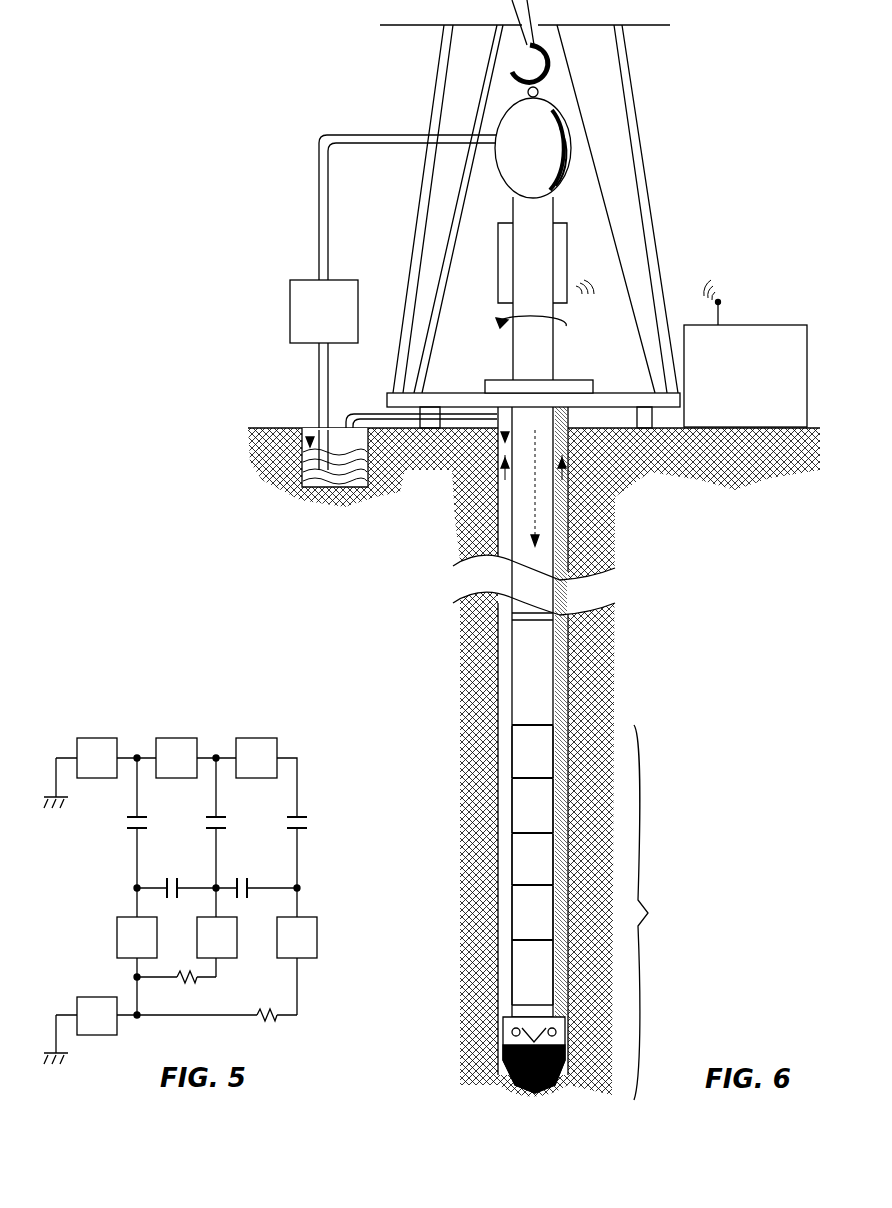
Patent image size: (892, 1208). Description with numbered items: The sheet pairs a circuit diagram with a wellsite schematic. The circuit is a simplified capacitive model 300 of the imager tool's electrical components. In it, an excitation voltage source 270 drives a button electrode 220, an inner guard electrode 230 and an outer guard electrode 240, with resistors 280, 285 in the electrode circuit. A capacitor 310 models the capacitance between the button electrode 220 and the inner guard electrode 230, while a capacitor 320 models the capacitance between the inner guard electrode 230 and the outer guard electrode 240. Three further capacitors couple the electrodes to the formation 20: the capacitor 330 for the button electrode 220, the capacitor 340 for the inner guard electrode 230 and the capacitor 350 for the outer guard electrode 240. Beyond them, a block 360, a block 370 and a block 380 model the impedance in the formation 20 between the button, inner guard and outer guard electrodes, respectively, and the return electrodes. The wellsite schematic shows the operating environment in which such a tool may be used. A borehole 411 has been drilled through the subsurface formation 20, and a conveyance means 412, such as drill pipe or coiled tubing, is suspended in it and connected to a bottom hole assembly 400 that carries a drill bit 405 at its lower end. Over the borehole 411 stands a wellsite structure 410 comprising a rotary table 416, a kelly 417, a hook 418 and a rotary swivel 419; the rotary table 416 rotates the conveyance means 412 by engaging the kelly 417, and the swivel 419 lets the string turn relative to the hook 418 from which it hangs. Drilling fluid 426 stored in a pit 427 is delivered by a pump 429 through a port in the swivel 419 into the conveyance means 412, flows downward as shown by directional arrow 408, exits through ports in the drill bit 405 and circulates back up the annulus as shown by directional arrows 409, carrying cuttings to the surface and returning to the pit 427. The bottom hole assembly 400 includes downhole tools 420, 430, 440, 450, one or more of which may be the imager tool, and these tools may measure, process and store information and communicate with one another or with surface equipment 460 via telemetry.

In FIG. 6, the formation 20 is at (534, 762).
In FIG. 6, the bottom hole assembly 400 is at (604, 856).
In FIG. 6, the drill bit 405 is at (503, 1050).
In FIG. 6, the directional arrow 408 is at (533, 512).
In FIG. 6, the directional arrows 409 is at (507, 492).
In FIG. 6, the wellsite structure 410 is at (650, 114).
In FIG. 6, the borehole 411 is at (497, 414).
In FIG. 6, the conveyance means 412 is at (560, 450).
In FIG. 6, the rotary table 416 is at (583, 378).
In FIG. 6, the kelly 417 is at (513, 353).
In FIG. 6, the hook 418 is at (553, 72).
In FIG. 6, the rotary swivel 419 is at (500, 182).
In FIG. 6, the downhole tool 420 is at (498, 805).
In FIG. 6, the downhole tool 430 is at (498, 860).
In FIG. 6, the downhole tool 440 is at (513, 913).
In FIG. 6, the downhole tool 450 is at (513, 967).
In FIG. 6, the drilling fluid 426 is at (335, 483).
In FIG. 6, the pit 427 is at (310, 435).
In FIG. 6, the pump 429 is at (306, 350).
In FIG. 6, the surface equipment 460 is at (746, 325).
In FIG. 5, the capacitive model 300 is at (134, 708).
In FIG. 5, the block 380 is at (97, 758).
In FIG. 5, the block 370 is at (176, 758).
In FIG. 5, the block 360 is at (256, 758).
In FIG. 5, the capacitor 350 is at (131, 830).
In FIG. 5, the capacitor 340 is at (216, 816).
In FIG. 5, the capacitor 330 is at (296, 816).
In FIG. 5, the capacitor 320 is at (178, 885).
In FIG. 5, the capacitor 310 is at (248, 885).
In FIG. 5, the outer guard electrode 240 is at (137, 937).
In FIG. 5, the inner guard electrode 230 is at (217, 937).
In FIG. 5, the button electrode 220 is at (297, 937).
In FIG. 5, the excitation voltage source 270 is at (97, 1016).
In FIG. 5, the resistor 285 is at (196, 979).
In FIG. 5, the resistor 280 is at (258, 1017).